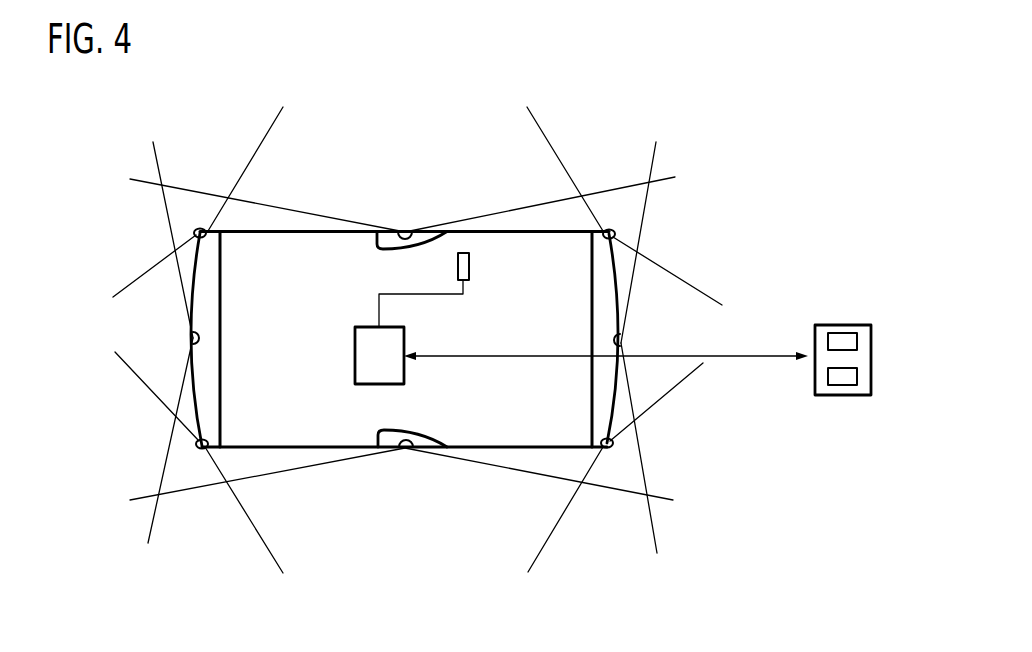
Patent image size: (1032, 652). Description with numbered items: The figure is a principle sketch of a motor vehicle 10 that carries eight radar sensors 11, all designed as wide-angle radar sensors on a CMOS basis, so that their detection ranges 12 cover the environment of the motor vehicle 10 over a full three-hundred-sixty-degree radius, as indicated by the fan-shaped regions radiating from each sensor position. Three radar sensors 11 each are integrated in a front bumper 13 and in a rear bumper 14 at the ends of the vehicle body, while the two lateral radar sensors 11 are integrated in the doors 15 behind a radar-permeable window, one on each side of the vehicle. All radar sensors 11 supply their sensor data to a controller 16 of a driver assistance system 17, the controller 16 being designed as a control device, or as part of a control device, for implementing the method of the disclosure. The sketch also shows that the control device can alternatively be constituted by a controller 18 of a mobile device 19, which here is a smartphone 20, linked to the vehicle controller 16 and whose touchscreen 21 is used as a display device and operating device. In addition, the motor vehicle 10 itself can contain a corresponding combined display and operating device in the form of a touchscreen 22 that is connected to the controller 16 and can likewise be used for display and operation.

The motor vehicle 10 is at (270, 231).
The radar sensor 11 is at (408, 231).
The detection range 12 is at (377, 167).
The front bumper 13 is at (600, 383).
The rear bumper 14 is at (207, 394).
The door 15 is at (375, 240).
The controller 16 is at (388, 385).
The driver assistance system 17 is at (337, 311).
The controller of the mobile device 18 is at (838, 385).
The mobile device 19 is at (841, 349).
The smartphone 20 is at (858, 395).
The touchscreen 21 is at (835, 332).
The touchscreen 22 is at (472, 264).